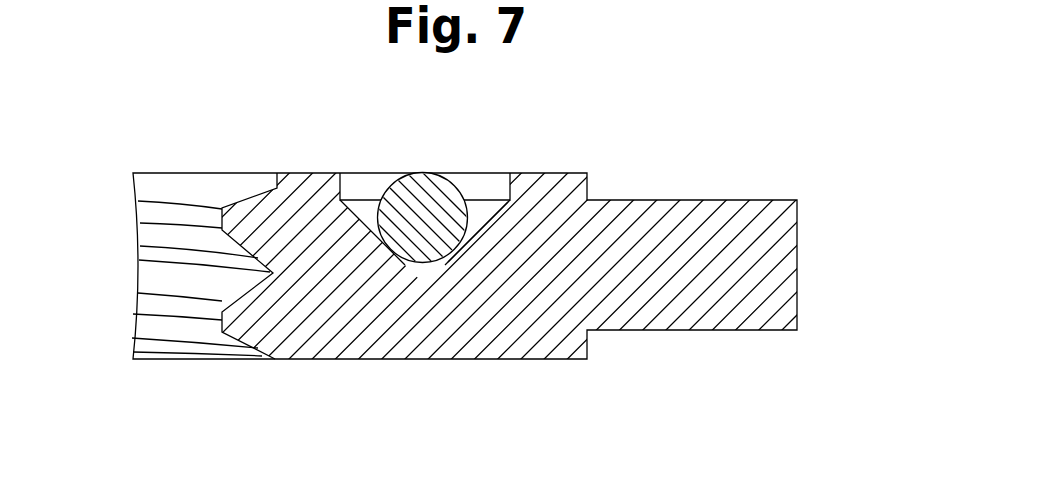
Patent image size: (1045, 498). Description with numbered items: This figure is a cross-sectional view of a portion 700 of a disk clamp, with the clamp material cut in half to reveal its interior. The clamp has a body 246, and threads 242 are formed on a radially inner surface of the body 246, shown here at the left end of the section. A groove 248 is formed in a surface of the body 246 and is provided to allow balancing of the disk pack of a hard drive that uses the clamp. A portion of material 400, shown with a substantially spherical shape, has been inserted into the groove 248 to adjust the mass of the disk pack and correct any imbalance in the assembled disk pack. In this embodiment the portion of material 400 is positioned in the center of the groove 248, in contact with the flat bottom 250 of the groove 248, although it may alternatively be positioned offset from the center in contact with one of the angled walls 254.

The threads 242 is at (197, 217).
The body 246 is at (548, 173).
The groove 248 is at (481, 193).
The flat bottom 250 is at (417, 262).
The angled walls 254 is at (475, 228).
The portion of material 400 is at (422, 210).
The portion of a disk clamp 700 is at (295, 378).